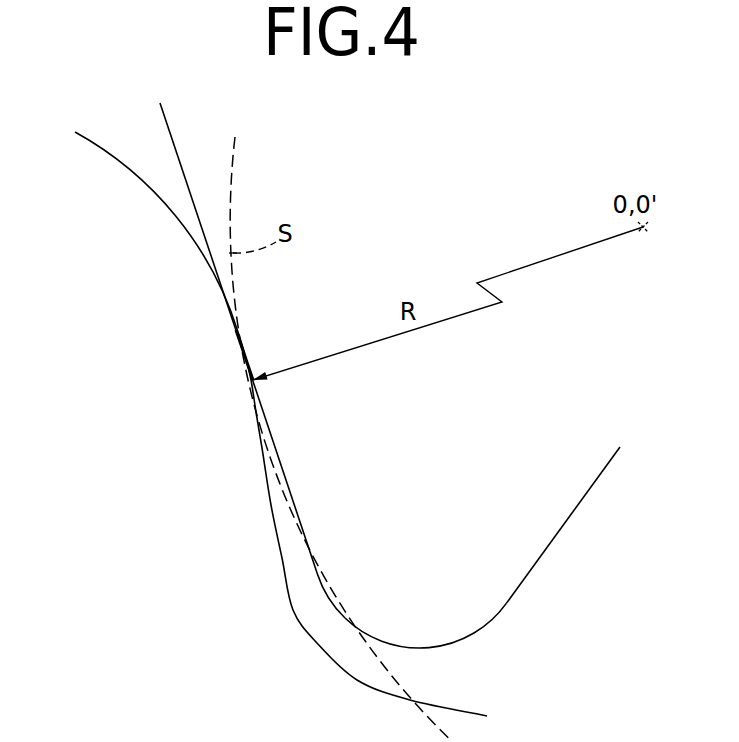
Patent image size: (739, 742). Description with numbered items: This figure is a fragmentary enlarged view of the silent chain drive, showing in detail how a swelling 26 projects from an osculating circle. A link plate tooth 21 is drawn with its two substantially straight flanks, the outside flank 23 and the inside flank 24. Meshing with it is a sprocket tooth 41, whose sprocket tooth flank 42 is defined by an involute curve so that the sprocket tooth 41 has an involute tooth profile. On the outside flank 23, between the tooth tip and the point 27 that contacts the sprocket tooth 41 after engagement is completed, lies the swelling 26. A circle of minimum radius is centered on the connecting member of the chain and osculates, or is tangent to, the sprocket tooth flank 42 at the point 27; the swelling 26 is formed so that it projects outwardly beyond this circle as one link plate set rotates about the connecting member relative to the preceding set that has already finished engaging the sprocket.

The sprocket tooth 41 is at (180, 218).
The point 27 is at (238, 338).
The outside flank 23 is at (275, 452).
The sprocket tooth flank 42 is at (268, 480).
The swelling 26 is at (323, 585).
The tooth 21 is at (469, 513).
The inside flank 24 is at (562, 531).